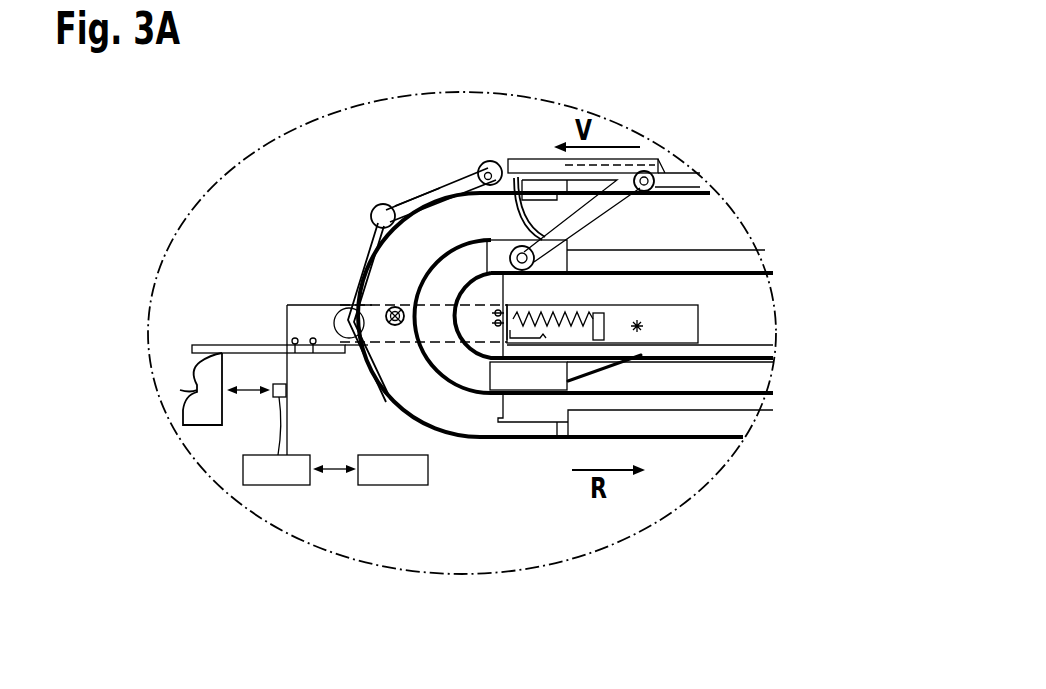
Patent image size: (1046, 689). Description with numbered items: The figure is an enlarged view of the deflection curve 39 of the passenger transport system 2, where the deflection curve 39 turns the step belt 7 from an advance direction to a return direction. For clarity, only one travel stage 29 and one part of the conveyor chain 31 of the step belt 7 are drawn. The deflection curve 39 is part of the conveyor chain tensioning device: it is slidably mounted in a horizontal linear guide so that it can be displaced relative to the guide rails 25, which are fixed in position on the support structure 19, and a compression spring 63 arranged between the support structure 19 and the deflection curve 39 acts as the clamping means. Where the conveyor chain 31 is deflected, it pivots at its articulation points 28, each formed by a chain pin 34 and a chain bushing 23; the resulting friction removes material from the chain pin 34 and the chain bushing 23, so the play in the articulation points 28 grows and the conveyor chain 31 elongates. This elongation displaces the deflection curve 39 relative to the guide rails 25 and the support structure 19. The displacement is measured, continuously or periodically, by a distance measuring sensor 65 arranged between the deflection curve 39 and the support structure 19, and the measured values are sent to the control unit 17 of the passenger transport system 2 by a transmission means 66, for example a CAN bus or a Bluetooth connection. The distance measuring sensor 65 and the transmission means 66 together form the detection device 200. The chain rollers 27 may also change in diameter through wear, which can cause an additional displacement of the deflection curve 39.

The passenger transport system 2 is at (139, 220).
The step belt 7 is at (451, 162).
The control unit 17 is at (398, 475).
The support structure 19 is at (205, 398).
The chain bushing 23 is at (508, 185).
The guide rails 25 is at (748, 262).
The chain rollers 27 is at (381, 212).
The articulation points 28 is at (503, 165).
The travel stage 29 is at (541, 158).
The conveyor chain 31 is at (412, 208).
The chain pin 34 is at (483, 149).
The deflection curve 39 is at (410, 195).
The compression spring 63 is at (588, 305).
The distance measuring sensor 65 is at (286, 391).
The transmission means 66 is at (275, 472).
The detection device 200 is at (218, 440).